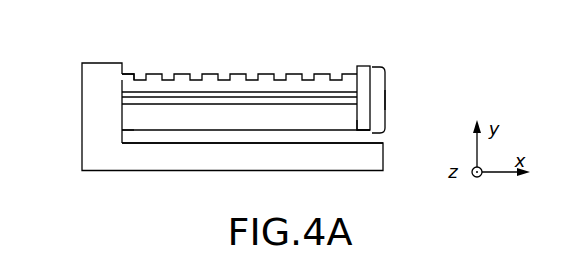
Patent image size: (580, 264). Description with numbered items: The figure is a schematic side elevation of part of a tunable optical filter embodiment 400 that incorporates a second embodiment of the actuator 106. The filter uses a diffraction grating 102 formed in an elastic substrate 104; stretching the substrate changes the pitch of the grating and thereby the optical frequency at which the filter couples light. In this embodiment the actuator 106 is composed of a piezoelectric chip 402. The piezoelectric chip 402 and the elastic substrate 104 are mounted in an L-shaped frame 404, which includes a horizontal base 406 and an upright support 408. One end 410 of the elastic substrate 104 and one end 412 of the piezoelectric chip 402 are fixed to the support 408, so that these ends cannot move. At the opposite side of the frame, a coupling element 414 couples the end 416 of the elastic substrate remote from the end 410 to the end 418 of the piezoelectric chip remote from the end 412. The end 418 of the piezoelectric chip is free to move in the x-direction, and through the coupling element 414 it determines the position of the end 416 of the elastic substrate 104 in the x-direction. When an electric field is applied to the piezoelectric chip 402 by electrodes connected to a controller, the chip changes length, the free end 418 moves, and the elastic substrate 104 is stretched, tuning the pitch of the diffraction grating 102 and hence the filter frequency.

The tunable optical filter embodiment 400 is at (442, 65).
The diffraction grating 102 is at (200, 73).
The elastic substrate 104 is at (255, 88).
The actuator 106 is at (385, 100).
The piezoelectric chip 402 is at (219, 126).
The L-shaped frame 404 is at (79, 145).
The base 406 is at (166, 150).
The support 408 is at (97, 90).
The end of the elastic substrate 410 is at (119, 77).
The end of the piezoelectric chip 412 is at (119, 130).
The coupling element 414 is at (372, 66).
The end of the elastic substrate 416 is at (359, 79).
The end of the piezoelectric chip 418 is at (360, 116).